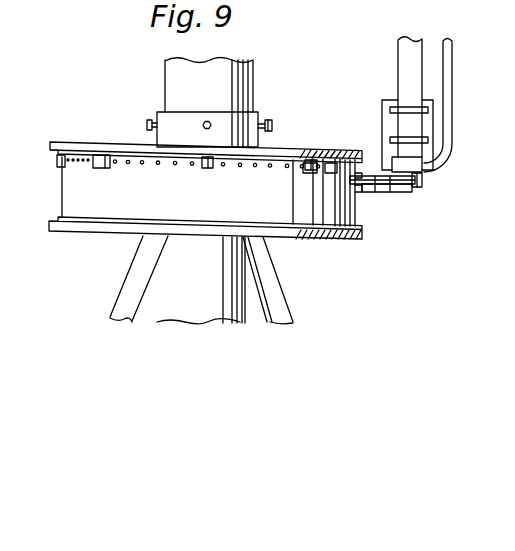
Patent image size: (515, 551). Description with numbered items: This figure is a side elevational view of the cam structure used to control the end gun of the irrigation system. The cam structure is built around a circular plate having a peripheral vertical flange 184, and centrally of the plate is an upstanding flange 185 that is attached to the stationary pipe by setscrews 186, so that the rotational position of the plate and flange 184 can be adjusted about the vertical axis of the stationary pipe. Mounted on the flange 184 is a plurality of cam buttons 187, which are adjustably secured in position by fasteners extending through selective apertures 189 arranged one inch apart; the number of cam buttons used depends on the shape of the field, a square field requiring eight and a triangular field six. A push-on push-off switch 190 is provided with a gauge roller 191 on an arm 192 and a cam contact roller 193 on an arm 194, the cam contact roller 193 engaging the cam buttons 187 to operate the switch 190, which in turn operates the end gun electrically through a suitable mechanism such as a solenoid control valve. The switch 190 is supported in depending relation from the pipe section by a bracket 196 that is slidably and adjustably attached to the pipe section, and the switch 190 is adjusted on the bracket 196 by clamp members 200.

The peripheral vertical flange 184 is at (350, 218).
The upstanding flange 185 is at (227, 120).
The setscrews 186 is at (147, 124).
The cam buttons 187 is at (203, 170).
The apertures 189 is at (256, 168).
The push-on push-off switch 190 is at (424, 176).
The gauge roller 191 is at (348, 200).
The arm 192 is at (351, 197).
The cam contact roller 193 is at (363, 164).
The arm 194 is at (412, 186).
The bracket 196 is at (410, 48).
The clamp members 200 is at (408, 110).